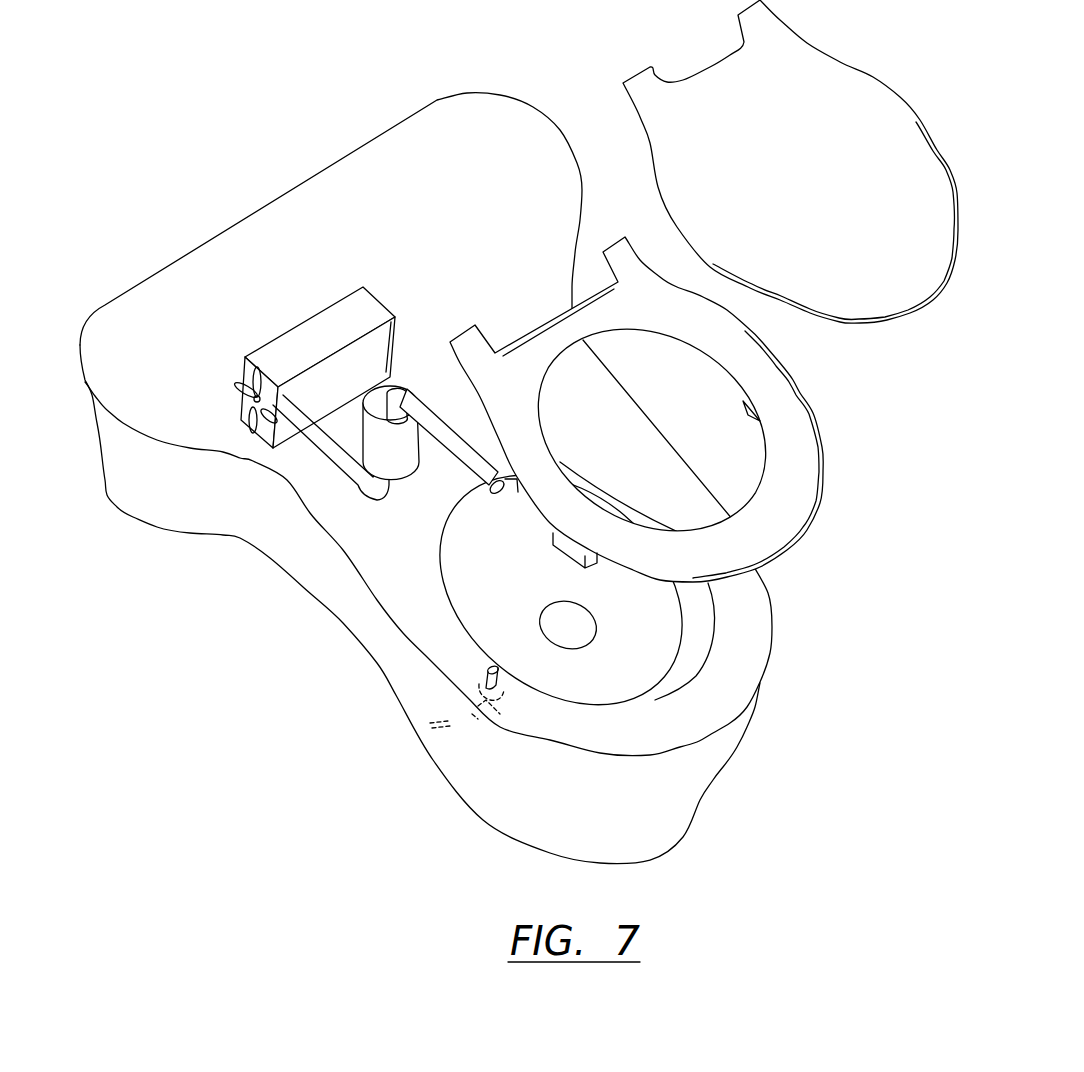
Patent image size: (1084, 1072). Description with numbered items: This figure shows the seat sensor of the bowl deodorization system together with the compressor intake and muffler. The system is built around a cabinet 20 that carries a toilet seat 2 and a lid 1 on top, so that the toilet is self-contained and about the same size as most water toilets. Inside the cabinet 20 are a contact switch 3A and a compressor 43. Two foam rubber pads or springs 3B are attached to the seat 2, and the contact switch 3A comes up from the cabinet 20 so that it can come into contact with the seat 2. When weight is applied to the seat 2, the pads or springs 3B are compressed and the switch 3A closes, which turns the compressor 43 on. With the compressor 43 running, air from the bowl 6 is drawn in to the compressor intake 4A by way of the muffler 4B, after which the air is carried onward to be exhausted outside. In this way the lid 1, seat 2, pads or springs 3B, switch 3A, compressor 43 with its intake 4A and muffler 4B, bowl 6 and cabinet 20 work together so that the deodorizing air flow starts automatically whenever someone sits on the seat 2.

The lid 1 is at (831, 226).
The toilet seat 2 is at (797, 481).
The contact switch 3A is at (487, 667).
The foam rubber pads or springs 3B is at (752, 417).
The compressor intake 4A is at (473, 471).
The muffler 4B is at (362, 493).
The bowl 6 is at (649, 638).
The cabinet 20 is at (641, 825).
The compressor 43 is at (287, 333).